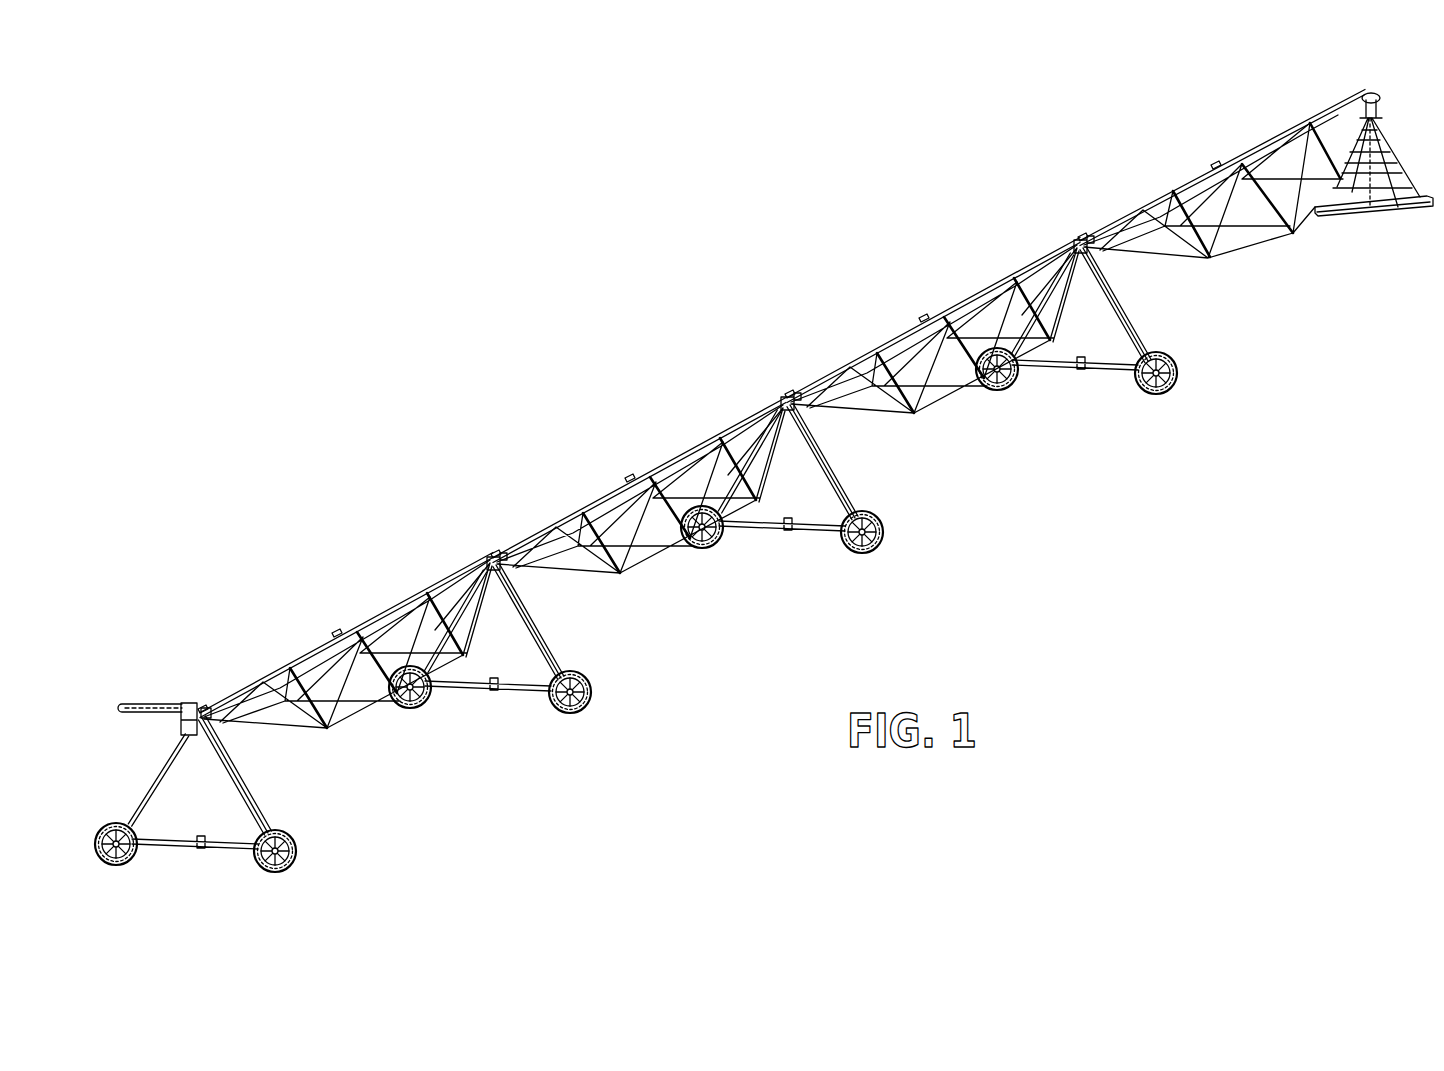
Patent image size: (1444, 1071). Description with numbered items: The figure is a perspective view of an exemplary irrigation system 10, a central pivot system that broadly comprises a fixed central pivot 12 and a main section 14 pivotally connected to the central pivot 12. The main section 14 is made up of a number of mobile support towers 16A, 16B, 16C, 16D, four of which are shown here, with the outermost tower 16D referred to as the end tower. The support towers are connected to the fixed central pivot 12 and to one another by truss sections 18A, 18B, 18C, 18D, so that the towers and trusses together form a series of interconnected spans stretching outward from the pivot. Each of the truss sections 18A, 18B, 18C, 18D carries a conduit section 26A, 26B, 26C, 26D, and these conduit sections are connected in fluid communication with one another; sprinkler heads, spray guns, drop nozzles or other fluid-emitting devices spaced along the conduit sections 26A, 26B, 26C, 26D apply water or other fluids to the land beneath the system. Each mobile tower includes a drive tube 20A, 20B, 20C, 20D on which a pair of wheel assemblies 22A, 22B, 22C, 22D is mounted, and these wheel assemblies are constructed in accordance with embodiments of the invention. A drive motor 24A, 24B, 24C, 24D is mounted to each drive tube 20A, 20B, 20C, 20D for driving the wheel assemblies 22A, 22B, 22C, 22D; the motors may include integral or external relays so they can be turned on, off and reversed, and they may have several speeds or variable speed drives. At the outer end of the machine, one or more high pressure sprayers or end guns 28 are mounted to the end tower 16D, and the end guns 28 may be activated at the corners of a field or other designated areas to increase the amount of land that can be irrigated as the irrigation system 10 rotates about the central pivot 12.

The irrigation system 10 is at (644, 356).
The central pivot 12 is at (1405, 133).
The main section 14 is at (878, 293).
The mobile support tower 16A is at (1089, 220).
The mobile support tower 16B is at (794, 378).
The mobile support tower 16C is at (499, 538).
The end tower 16D is at (206, 693).
The truss section 18A is at (1205, 277).
The truss section 18B is at (935, 434).
The truss section 18C is at (637, 590).
The truss section 18D is at (370, 735).
The drive tube 20A is at (1140, 304).
The drive tube 20B is at (847, 461).
The drive tube 20C is at (553, 621).
The drive tube 20D is at (262, 775).
The wheel assembly 22A is at (1121, 393).
The wheel assembly 22B is at (826, 551).
The wheel assembly 22C is at (534, 710).
The wheel assembly 22D is at (243, 869).
The drive motor 24A is at (1076, 397).
The drive motor 24B is at (783, 557).
The drive motor 24C is at (489, 716).
The drive motor 24D is at (199, 875).
The conduit section 26A is at (1222, 165).
The conduit section 26B is at (933, 320).
The conduit section 26C is at (639, 480).
The conduit section 26D is at (346, 631).
The end gun 28 is at (155, 703).